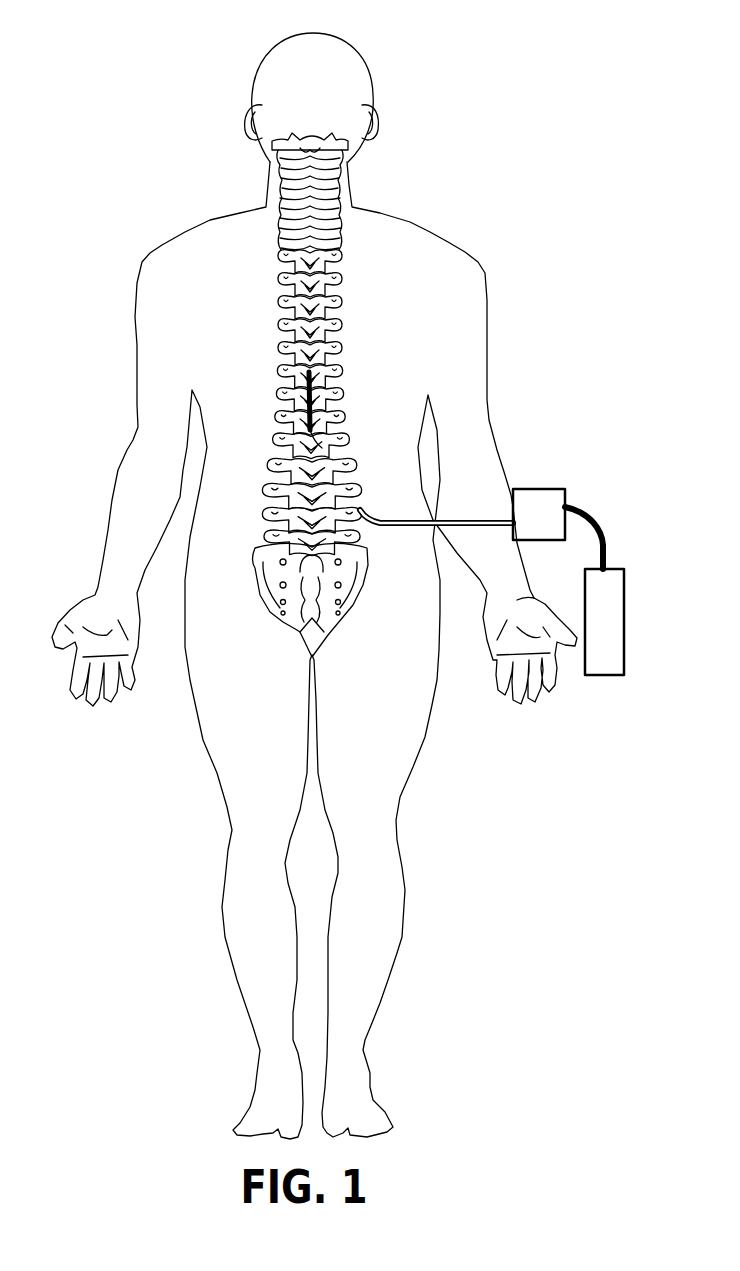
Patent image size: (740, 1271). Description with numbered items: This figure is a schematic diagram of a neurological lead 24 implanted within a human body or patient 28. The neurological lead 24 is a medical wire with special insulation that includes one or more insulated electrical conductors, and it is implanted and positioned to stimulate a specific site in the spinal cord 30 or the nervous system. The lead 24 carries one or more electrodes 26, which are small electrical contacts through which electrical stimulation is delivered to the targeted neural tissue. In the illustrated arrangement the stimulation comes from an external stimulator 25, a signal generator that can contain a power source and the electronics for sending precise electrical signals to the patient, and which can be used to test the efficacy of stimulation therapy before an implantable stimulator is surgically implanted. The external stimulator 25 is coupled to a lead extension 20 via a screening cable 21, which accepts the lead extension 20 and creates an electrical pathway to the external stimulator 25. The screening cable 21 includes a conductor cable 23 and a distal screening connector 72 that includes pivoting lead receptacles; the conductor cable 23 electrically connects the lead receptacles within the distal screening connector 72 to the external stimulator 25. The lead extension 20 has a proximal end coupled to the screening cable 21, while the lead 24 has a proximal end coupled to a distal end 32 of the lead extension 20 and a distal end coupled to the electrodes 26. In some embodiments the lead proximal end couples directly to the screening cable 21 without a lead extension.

The lead extension 20 is at (432, 524).
The screening cable 21 is at (592, 496).
The conductor cable 23 is at (592, 510).
The neurological lead 24 is at (345, 438).
The external stimulator 25 is at (603, 677).
The electrodes 26 is at (346, 382).
The patient 28 is at (428, 229).
The spinal cord 30 is at (347, 347).
The distal end of the lead extension 32 is at (357, 467).
The distal screening connector 72 is at (545, 488).